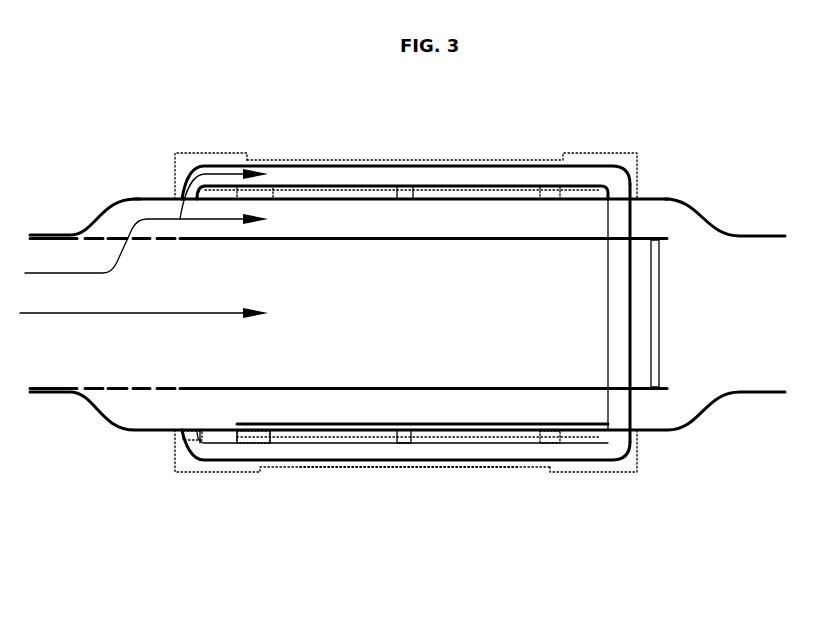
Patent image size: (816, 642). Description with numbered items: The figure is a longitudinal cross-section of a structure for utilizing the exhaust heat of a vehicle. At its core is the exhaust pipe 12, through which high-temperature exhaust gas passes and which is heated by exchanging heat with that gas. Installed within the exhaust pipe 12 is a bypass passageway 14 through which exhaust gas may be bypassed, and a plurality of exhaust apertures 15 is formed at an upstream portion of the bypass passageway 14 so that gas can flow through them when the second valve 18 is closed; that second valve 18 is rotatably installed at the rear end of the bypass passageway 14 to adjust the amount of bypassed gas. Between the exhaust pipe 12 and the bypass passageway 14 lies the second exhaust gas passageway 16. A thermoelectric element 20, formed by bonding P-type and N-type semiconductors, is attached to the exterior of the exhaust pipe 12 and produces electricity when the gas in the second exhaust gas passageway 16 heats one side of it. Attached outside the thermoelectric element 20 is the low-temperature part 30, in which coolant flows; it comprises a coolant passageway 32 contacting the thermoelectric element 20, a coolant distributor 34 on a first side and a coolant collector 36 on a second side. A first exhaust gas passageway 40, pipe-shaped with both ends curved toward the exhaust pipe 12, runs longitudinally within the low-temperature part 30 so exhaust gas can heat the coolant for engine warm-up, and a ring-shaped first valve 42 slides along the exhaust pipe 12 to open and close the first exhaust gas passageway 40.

The exhaust pipe 12 is at (708, 413).
The bypass passageway 14 is at (508, 290).
The exhaust apertures 15 is at (106, 236).
The second exhaust gas passageway 16 is at (435, 207).
The second valve 18 is at (658, 312).
The thermoelectric element 20 is at (365, 195).
The low-temperature part 30 is at (527, 578).
The coolant passageway 32 is at (387, 463).
The coolant distributor 34 is at (617, 460).
The coolant collector 36 is at (193, 463).
The first exhaust gas passageway 40 is at (320, 177).
The first valve 42 is at (623, 222).